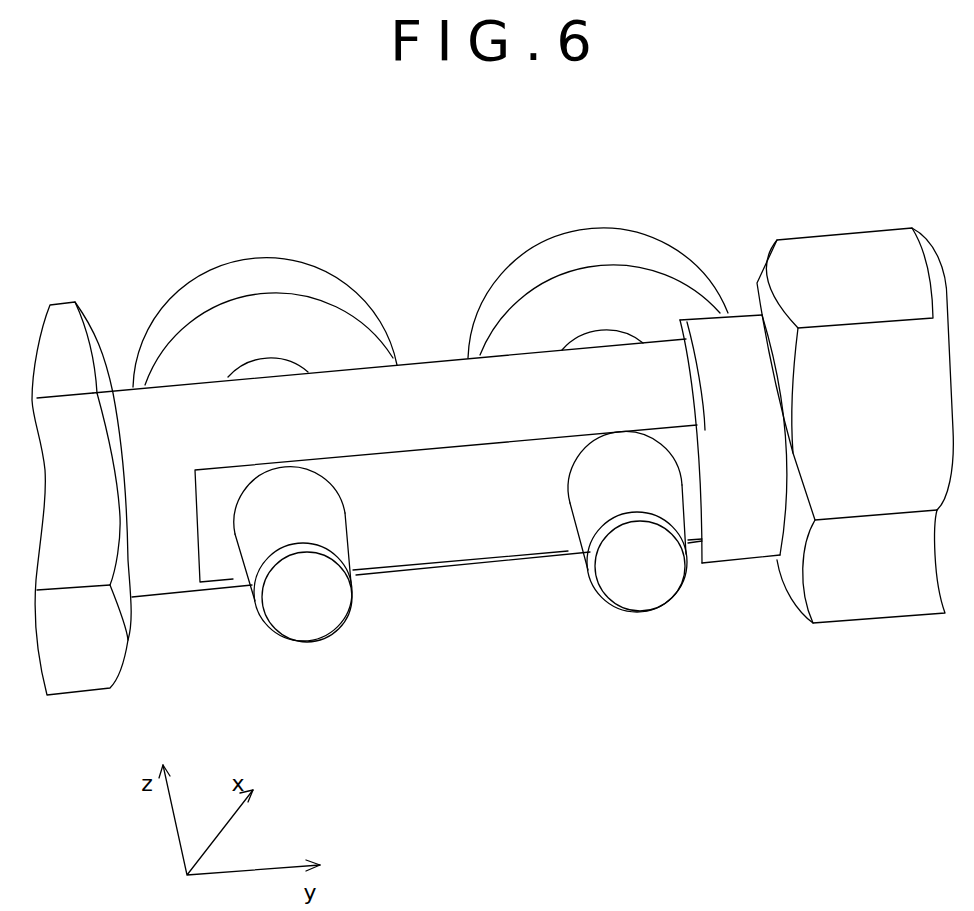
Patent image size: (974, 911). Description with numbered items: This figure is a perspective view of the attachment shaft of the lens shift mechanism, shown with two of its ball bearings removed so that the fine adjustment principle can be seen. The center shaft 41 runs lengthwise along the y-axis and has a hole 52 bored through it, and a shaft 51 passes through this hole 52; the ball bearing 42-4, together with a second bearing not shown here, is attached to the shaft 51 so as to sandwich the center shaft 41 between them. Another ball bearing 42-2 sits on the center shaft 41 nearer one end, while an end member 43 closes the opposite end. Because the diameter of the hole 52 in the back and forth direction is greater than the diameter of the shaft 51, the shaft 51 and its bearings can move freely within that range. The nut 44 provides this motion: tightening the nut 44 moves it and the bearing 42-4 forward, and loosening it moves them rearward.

The center shaft 41 is at (437, 385).
The ball bearing 42-2 is at (267, 283).
The ball bearing 42-4 is at (597, 253).
The end member 43 is at (69, 325).
The nut 44 is at (855, 263).
The shaft 51 is at (640, 578).
The hole 52 is at (570, 503).